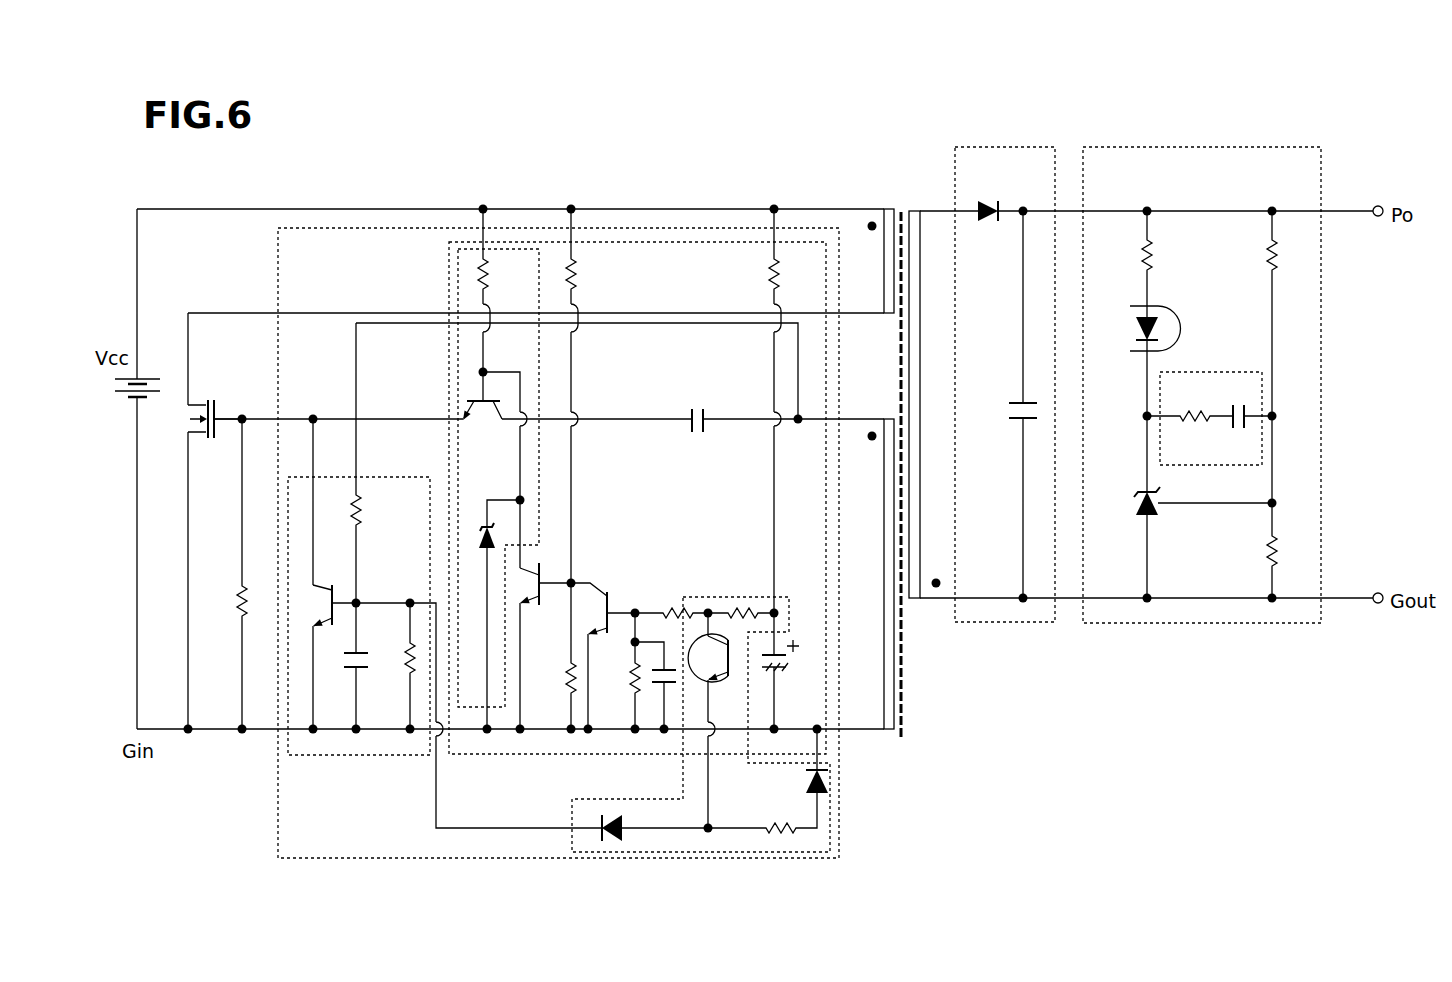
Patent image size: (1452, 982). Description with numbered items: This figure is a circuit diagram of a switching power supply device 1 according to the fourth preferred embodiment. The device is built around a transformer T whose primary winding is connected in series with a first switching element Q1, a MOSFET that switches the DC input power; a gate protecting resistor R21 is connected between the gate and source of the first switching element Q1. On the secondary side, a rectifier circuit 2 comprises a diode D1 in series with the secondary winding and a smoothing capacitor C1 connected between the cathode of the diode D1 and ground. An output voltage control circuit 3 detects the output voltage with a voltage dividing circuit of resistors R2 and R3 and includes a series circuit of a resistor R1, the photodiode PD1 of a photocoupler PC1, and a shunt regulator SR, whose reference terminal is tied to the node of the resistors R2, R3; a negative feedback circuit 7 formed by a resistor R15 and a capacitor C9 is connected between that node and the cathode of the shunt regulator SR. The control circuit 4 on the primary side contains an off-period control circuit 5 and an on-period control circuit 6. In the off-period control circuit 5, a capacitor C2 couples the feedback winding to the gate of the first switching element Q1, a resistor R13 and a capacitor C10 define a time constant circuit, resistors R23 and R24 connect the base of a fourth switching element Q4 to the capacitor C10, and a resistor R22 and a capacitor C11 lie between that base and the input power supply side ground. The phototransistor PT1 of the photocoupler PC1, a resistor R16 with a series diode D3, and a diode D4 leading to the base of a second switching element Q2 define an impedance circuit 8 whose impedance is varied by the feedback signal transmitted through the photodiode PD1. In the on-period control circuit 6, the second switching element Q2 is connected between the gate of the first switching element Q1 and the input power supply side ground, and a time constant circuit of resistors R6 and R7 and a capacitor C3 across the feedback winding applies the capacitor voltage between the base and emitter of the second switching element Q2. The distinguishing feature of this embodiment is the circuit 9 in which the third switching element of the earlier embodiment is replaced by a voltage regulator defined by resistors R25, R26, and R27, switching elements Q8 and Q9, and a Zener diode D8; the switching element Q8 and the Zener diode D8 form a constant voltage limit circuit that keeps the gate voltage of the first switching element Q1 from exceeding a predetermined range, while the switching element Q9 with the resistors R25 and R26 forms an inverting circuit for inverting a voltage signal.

The switching power supply device 1 is at (420, 88).
The rectifier circuit 2 is at (1003, 147).
The output voltage control circuit 3 is at (1217, 147).
The control circuit 4 is at (395, 228).
The off-period control circuit 5 is at (630, 242).
The on-period control circuit 6 is at (392, 477).
The negative feedback circuit 7 is at (1248, 372).
The impedance circuit 8 is at (843, 815).
The clamp circuit 9 is at (520, 249).
The transformer T is at (902, 462).
The first switching element Q1 is at (215, 405).
The second switching element Q2 is at (330, 591).
The fourth switching element Q4 is at (596, 601).
The switching element Q8 is at (482, 426).
The switching element Q9 is at (533, 584).
The resistor R1 is at (1132, 255).
The resistor R2 is at (1254, 255).
The resistor R3 is at (1254, 551).
The resistor R6 is at (372, 510).
The resistor R7 is at (395, 669).
The resistor R13 is at (794, 274).
The resistor R15 is at (1191, 402).
The resistor R16 is at (779, 817).
The gate protecting resistor R21 is at (221, 601).
The resistor R22 is at (616, 682).
The resistor R23 is at (675, 600).
The resistor R24 is at (740, 599).
The resistor R25 is at (594, 274).
The resistor R26 is at (550, 682).
The resistor R27 is at (505, 274).
The smoothing capacitor C1 is at (1007, 415).
The capacitor C2 is at (697, 407).
The capacitor C3 is at (344, 675).
The capacitor C9 is at (1237, 433).
The capacitor C10 is at (789, 668).
The capacitor C11 is at (678, 692).
The diode D1 is at (991, 196).
The diode D3 is at (802, 782).
The diode D4 is at (627, 823).
The Zener diode D8 is at (474, 526).
The photocoupler PC1 is at (1180, 329).
The photodiode PD1 is at (1125, 351).
The phototransistor PT1 is at (722, 674).
The shunt regulator SR is at (1127, 503).